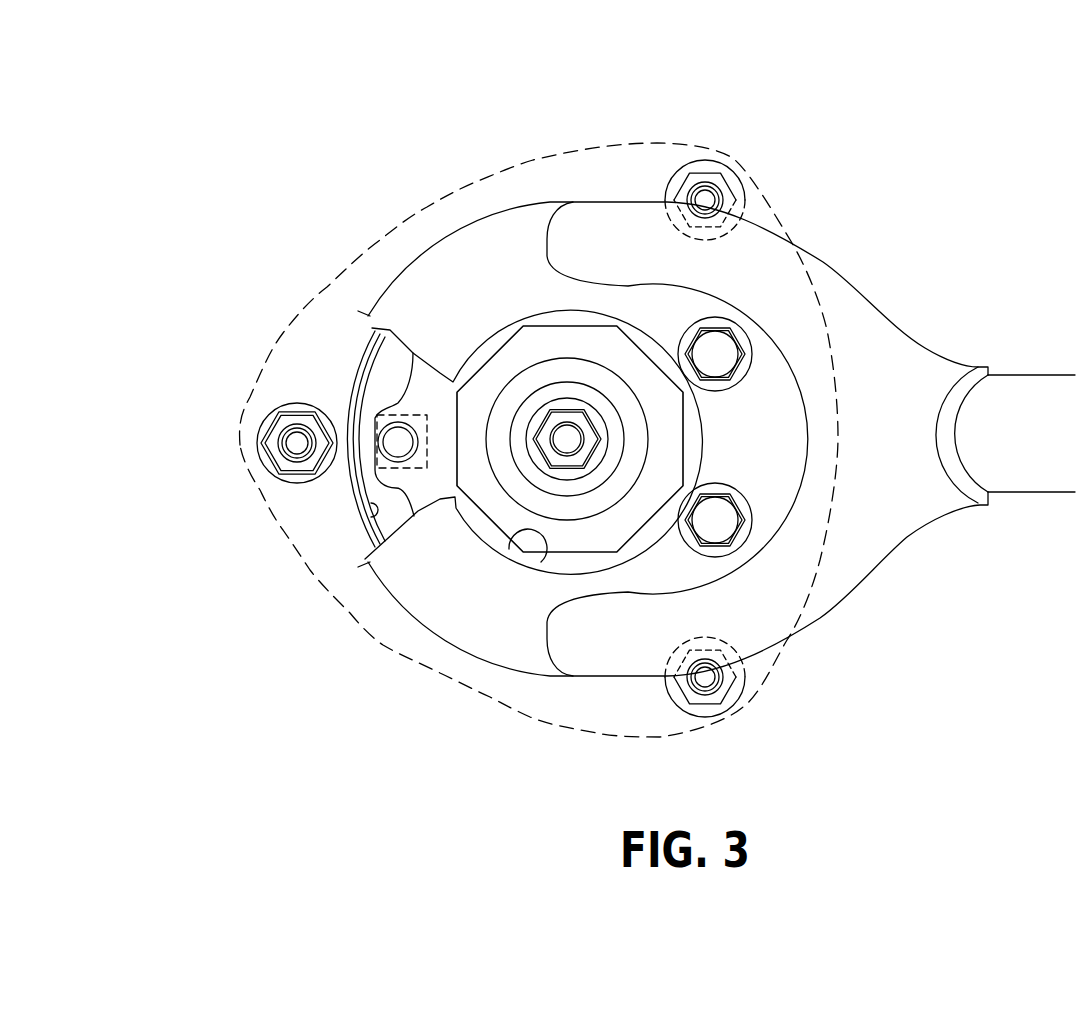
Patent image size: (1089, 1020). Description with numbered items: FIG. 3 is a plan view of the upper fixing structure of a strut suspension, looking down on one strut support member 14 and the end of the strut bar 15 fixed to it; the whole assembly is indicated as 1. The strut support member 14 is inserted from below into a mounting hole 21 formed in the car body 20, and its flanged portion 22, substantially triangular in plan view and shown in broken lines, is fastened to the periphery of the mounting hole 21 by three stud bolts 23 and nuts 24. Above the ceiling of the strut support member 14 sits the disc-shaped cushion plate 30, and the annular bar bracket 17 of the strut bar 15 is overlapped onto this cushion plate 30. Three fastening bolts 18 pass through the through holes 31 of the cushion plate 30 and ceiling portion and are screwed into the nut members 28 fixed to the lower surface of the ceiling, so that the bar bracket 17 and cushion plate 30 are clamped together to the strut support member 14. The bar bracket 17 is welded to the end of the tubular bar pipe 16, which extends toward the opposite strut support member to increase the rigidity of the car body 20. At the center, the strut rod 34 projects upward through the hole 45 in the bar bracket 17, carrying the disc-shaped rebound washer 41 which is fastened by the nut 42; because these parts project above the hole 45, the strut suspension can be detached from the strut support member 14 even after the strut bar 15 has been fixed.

The hub assembly 1 is at (808, 106).
The strut support member 14 is at (367, 350).
The strut bar 15 is at (1072, 268).
The bar pipe 16 is at (1049, 364).
The bar bracket 17 is at (912, 335).
The fastening bolts 18 is at (727, 358).
The car body 20 is at (290, 643).
The mounting hole 21 is at (367, 507).
The flanged portion 22 is at (390, 648).
The stud bolts 23 is at (293, 443).
The nuts 24 is at (273, 465).
The nut members 28 is at (414, 414).
The cushion plate 30 is at (393, 391).
The through holes 31 is at (398, 443).
The strut rod 34 is at (562, 434).
The rebound washer 41 is at (540, 342).
The nut 42 is at (588, 420).
The holes 45 is at (530, 530).